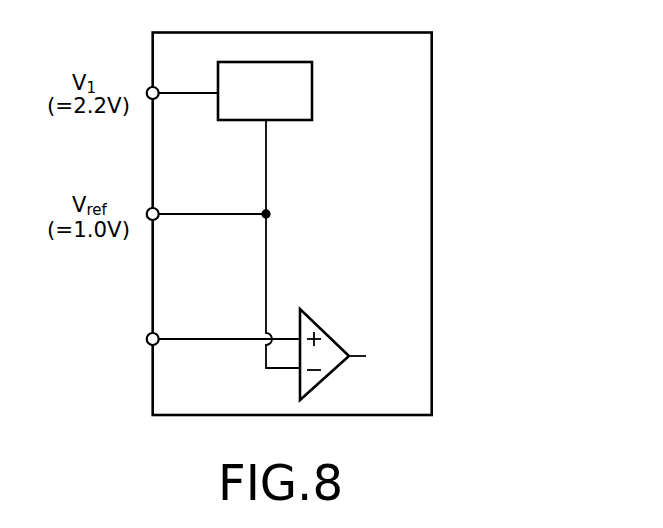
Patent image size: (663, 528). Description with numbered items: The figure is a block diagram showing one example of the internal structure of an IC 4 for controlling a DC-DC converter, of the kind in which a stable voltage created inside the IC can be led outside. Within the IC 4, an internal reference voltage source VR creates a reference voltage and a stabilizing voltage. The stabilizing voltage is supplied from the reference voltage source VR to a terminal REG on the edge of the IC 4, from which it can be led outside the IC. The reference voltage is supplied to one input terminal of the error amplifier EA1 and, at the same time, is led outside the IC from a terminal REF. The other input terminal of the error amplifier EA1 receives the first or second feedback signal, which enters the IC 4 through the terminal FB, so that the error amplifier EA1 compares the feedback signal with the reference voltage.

The IC 4 is at (432, 348).
The terminal REG is at (158, 91).
The internal reference voltage source VR is at (312, 92).
The terminal REF is at (158, 212).
The feedback terminal FB is at (158, 337).
The error amplifier EA1 is at (316, 317).